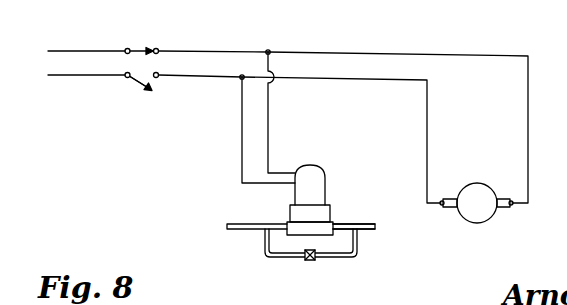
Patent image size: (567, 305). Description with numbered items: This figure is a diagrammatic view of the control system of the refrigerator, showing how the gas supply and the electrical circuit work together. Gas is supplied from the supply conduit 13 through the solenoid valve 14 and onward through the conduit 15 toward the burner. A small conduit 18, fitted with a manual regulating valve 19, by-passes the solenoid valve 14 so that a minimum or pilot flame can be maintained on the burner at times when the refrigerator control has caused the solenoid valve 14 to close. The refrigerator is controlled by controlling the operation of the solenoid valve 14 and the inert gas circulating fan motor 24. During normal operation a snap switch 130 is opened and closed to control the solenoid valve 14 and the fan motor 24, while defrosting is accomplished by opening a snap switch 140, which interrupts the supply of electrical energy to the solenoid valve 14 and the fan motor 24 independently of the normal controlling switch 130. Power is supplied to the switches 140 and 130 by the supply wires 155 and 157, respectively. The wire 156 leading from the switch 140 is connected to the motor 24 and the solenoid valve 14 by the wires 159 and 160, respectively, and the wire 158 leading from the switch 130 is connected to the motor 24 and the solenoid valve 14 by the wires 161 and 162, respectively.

The supply conduit 13 is at (359, 224).
The solenoid valve 14 is at (315, 186).
The conduit 15 is at (240, 224).
The small conduit 18 is at (358, 252).
The manual regulating valve 19 is at (310, 262).
The fan motor 24 is at (470, 190).
The snap switch 130 is at (135, 80).
The snap switch 140 is at (140, 50).
The supply wire 155 is at (58, 51).
The wire 156 is at (210, 52).
The supply wire 157 is at (97, 76).
The wire 158 is at (180, 78).
The wire 159 is at (455, 56).
The wire 160 is at (268, 121).
The wire 161 is at (345, 80).
The wire 162 is at (243, 168).